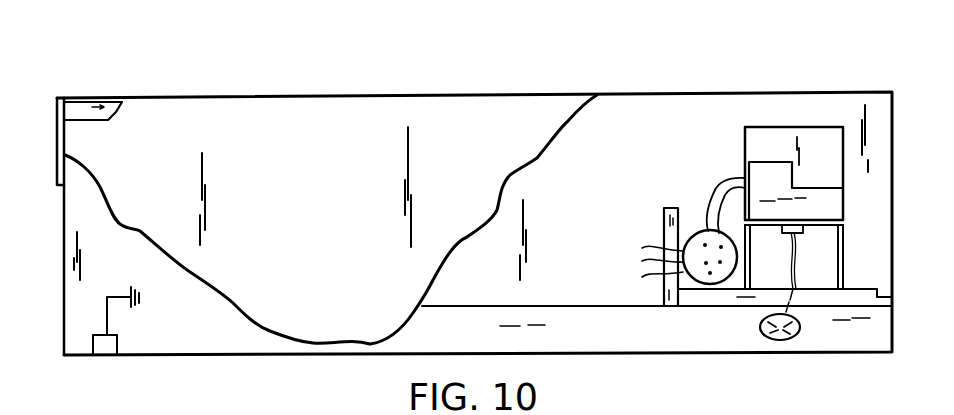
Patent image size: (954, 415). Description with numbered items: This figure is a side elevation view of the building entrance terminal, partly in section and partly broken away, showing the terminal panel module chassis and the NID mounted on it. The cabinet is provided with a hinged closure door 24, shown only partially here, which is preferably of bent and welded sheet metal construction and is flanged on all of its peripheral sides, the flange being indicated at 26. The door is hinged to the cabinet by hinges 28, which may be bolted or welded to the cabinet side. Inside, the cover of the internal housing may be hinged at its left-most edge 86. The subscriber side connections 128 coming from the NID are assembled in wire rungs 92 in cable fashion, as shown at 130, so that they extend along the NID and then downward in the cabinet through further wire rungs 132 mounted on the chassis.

The hinged closure door 24 is at (98, 98).
The flange 26 is at (70, 113).
The hinge 28 is at (65, 137).
The left-most edge 86 is at (260, 354).
The wire rungs 92 is at (830, 206).
The subscriber side connections 128 is at (716, 183).
The cable 130 is at (715, 283).
The wire rungs 132 is at (661, 221).